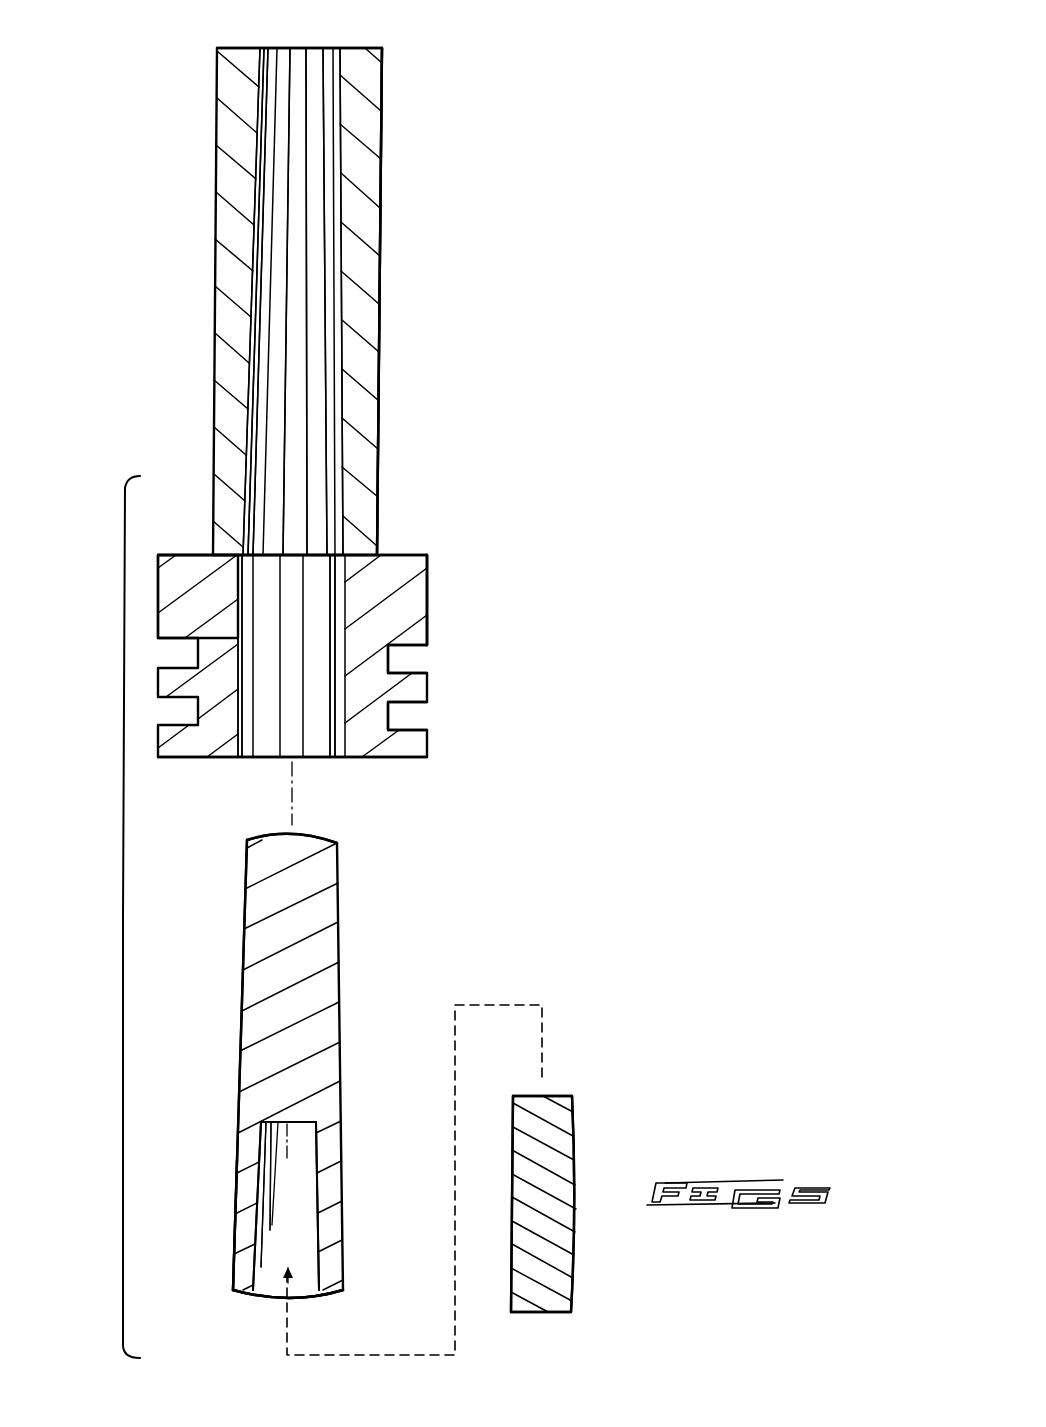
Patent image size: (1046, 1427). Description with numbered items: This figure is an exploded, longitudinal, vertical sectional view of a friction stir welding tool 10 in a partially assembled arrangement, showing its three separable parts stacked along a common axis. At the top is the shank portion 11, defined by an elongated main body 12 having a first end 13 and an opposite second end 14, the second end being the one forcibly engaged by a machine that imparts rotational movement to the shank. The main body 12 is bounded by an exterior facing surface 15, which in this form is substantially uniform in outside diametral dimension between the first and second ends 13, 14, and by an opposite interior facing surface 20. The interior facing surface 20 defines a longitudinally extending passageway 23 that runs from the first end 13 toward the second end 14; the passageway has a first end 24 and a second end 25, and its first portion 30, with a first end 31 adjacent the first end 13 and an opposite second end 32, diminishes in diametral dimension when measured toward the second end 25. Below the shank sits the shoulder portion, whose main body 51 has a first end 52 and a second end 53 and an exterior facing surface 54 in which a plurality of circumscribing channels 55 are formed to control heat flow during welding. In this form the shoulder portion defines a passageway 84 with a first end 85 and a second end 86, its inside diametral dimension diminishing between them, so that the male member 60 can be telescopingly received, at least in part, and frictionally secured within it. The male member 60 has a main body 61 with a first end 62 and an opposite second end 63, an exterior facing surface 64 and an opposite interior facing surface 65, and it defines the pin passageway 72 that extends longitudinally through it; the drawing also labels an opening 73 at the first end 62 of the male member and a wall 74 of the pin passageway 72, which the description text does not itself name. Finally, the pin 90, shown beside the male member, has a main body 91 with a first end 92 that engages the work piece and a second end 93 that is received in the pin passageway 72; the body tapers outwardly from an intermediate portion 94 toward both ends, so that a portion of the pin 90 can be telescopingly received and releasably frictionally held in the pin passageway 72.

The friction stir welding tool 10 is at (123, 918).
The shank portion 11 is at (420, 188).
The main body 12 is at (381, 331).
The first end 13 is at (228, 556).
The second end 14 is at (362, 50).
The exterior facing surface 15 is at (379, 416).
The interior facing surface 20 is at (257, 300).
The longitudinally extending passageway 23 is at (280, 367).
The first end 24 is at (337, 533).
The second end 25 is at (337, 58).
The first portion 30 is at (292, 468).
The first end 31 is at (247, 540).
The second end 32 is at (263, 60).
The main body 51 is at (420, 575).
The first end 52 is at (403, 758).
The second end 53 is at (415, 556).
The exterior facing surface 54 is at (428, 590).
The circumscribing channels 55 is at (430, 718).
The male member 60 is at (327, 983).
The main body 61 is at (262, 942).
The first end 62 is at (337, 1282).
The second end 63 is at (293, 848).
The exterior facing surface 64 is at (240, 1278).
The interior facing surface 65 is at (314, 1130).
The pin passageway 72 is at (294, 1202).
The bottom opening 73 is at (244, 1291).
The cavity wall 74 is at (265, 1140).
The passageway 84 is at (322, 737).
The first end 85 is at (240, 740).
The second end 86 is at (428, 618).
The pin 90 is at (654, 1245).
The main body 91 is at (558, 1260).
The first end 92 is at (555, 1310).
The second end 93 is at (553, 1117).
The intermediate portion 94 is at (574, 1205).